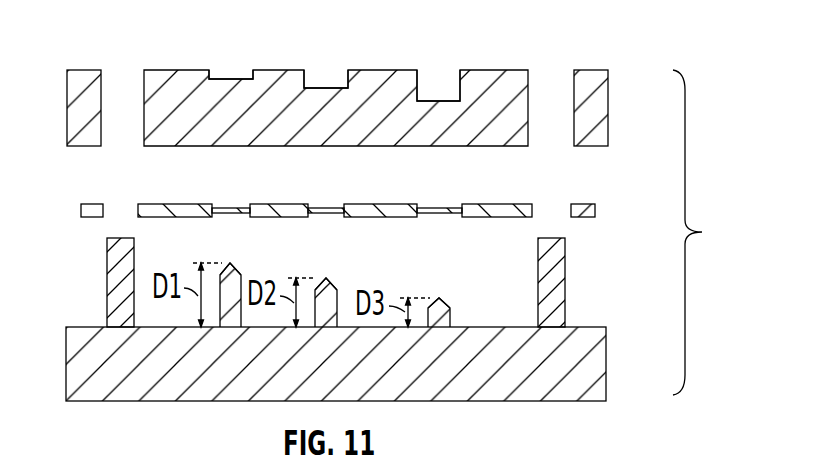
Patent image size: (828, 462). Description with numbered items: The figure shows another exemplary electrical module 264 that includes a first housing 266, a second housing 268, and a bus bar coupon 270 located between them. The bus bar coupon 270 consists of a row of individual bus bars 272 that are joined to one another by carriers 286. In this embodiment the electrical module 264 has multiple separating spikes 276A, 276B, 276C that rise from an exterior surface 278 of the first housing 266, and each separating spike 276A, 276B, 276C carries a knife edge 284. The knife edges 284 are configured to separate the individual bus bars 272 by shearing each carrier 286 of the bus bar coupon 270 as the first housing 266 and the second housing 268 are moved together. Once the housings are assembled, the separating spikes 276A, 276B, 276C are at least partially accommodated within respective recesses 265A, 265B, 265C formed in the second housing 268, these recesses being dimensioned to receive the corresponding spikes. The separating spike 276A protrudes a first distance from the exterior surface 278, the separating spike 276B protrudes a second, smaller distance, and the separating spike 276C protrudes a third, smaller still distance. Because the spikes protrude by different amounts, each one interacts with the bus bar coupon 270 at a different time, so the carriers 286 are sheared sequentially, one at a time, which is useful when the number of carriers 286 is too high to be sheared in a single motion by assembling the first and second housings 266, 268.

The electrical module 264 is at (711, 232).
The recess 265A is at (227, 100).
The recess 265B is at (323, 107).
The recess 265C is at (435, 118).
The first housing 266 is at (80, 373).
The second housing 268 is at (90, 85).
The bus bar coupon 270 is at (603, 210).
The bus bars 272 is at (497, 210).
The separating spike 276A is at (230, 330).
The separating spike 276B is at (324, 330).
The separating spike 276C is at (439, 330).
The exterior surface 278 is at (87, 327).
The knife edge 284 is at (234, 273).
The carrier 286 is at (440, 214).